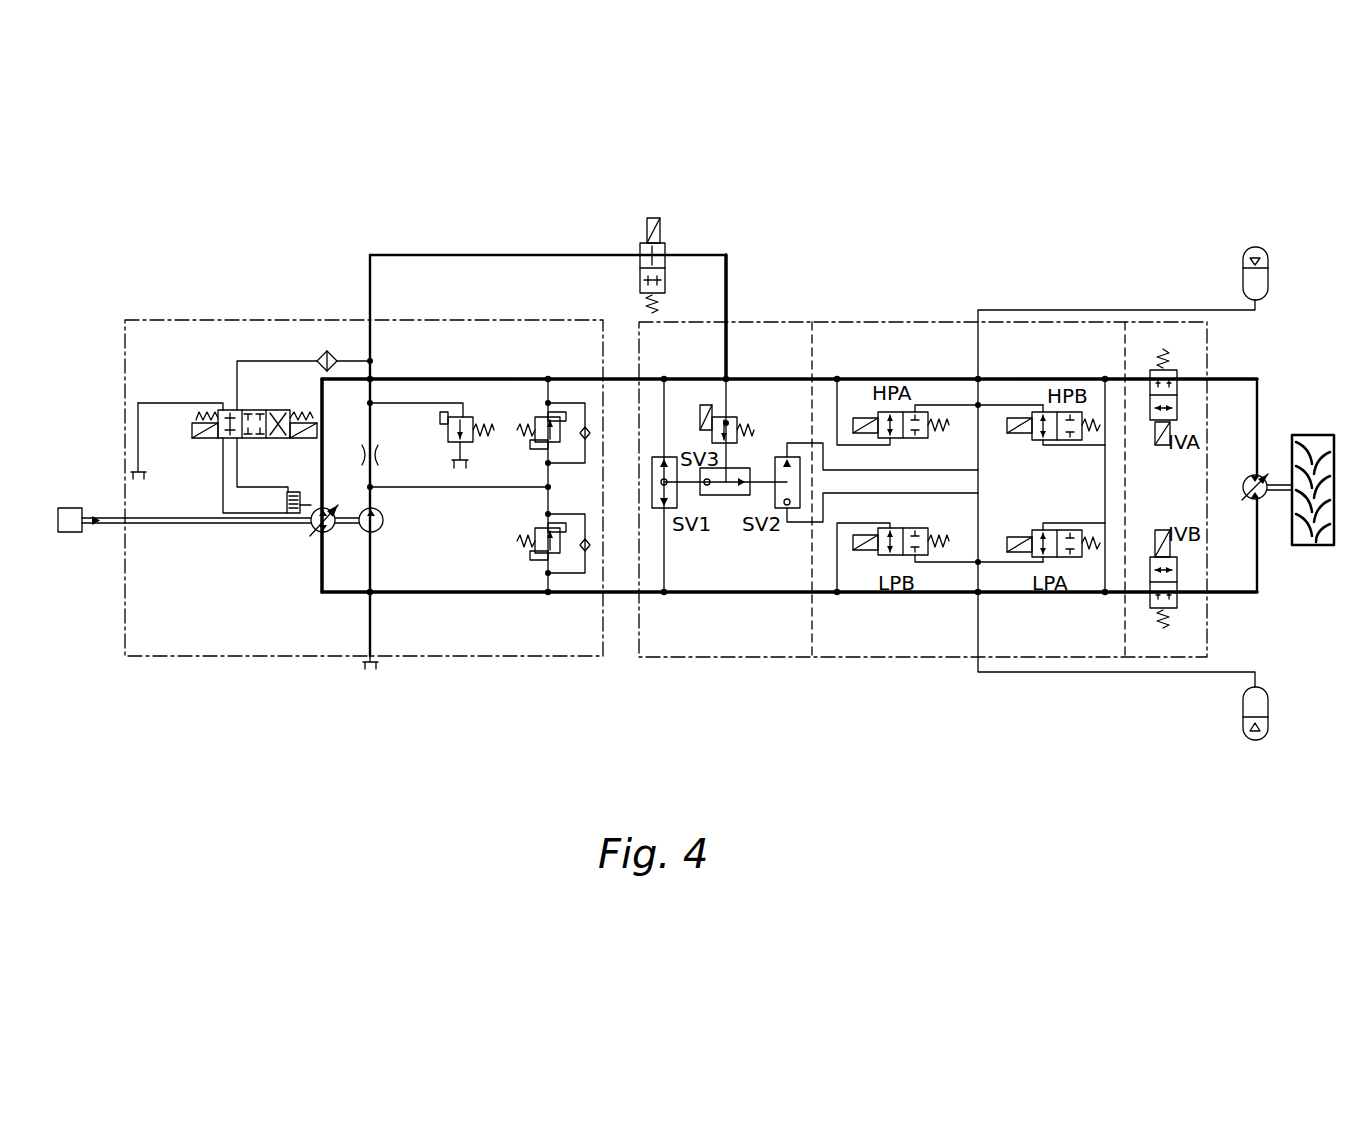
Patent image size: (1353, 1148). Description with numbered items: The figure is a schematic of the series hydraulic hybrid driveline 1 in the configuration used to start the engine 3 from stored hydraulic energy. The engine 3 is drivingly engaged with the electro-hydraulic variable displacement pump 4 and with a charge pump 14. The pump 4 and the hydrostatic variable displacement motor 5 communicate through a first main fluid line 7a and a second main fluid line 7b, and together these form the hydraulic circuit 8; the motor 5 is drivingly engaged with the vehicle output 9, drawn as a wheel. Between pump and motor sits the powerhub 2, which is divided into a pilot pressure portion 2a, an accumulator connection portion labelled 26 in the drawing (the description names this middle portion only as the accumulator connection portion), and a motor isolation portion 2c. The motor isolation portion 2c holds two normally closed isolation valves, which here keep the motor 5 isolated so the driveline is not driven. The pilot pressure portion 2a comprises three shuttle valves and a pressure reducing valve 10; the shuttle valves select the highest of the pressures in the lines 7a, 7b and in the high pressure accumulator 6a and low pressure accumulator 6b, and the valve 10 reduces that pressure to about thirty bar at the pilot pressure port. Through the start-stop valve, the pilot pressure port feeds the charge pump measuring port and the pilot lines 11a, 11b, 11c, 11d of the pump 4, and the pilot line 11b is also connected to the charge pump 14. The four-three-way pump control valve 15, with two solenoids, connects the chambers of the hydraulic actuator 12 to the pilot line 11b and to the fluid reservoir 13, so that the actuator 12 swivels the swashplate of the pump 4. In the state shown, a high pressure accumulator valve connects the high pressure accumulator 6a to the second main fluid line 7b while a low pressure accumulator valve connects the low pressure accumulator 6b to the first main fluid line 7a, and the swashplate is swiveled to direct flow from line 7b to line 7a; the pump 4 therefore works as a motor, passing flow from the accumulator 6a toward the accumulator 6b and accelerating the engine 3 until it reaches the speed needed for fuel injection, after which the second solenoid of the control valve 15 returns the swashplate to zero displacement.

The series hydraulic hybrid driveline 1 is at (750, 190).
The powerhub 2 is at (975, 218).
The pilot pressure portion 2a is at (778, 323).
The motor isolation portion 2c is at (1210, 372).
The engine 3 is at (70, 532).
The electro-hydraulic variable displacement pump 4 is at (310, 540).
The hydrostatic variable displacement motor 5 is at (1244, 480).
The high pressure accumulator 6a is at (1268, 283).
The low pressure accumulator 6b is at (1260, 740).
The first main fluid line 7a is at (443, 380).
The second main fluid line 7b is at (443, 592).
The hydraulic circuit 8 is at (1045, 360).
The vehicle output 9 is at (1303, 437).
The pressure reducing valve 10 is at (732, 392).
The pilot line 11a is at (450, 257).
The pilot line 11b is at (270, 360).
The pilot line 11c is at (240, 482).
The pilot line 11d is at (222, 452).
The hydraulic actuator 12 is at (277, 503).
The fluid reservoir 13 is at (373, 672).
The charge pump 14 is at (378, 530).
The pump control valve 15 is at (213, 392).
The accumulator connection portion 26 is at (850, 657).